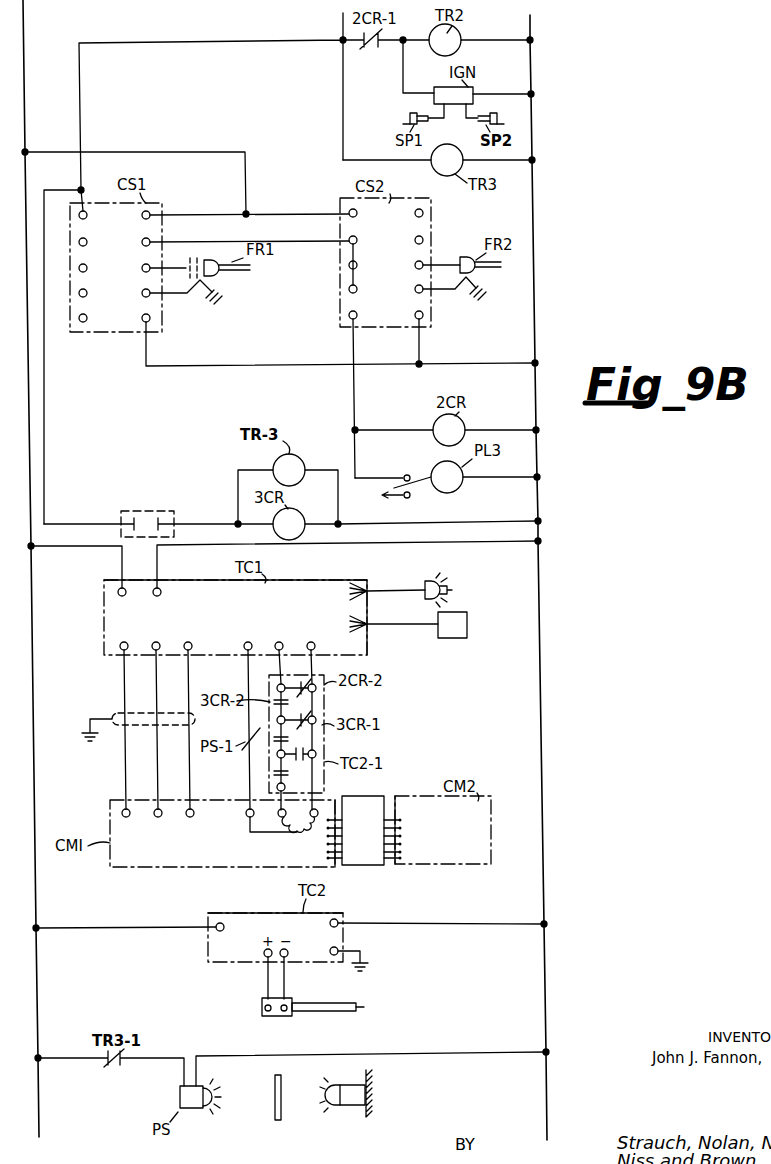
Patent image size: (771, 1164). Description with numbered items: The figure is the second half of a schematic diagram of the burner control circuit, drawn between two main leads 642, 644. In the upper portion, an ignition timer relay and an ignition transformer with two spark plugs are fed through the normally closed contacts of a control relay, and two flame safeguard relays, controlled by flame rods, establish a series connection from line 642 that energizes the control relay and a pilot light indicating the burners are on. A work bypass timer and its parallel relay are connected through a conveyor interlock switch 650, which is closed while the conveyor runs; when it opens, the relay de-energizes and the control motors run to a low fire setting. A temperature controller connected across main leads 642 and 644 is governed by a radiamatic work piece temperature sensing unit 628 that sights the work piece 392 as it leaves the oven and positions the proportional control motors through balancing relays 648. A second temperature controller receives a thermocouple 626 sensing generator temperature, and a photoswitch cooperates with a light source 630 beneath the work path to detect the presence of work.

The main lead 642 is at (24, 30).
The main lead 644 is at (532, 80).
The conveyor interlock switch 650 is at (150, 509).
The radiamatic work piece temperature sensing unit 628 is at (430, 581).
The balancing relays 648 is at (375, 866).
The thermocouple 626 is at (343, 994).
The light source 630 is at (336, 1084).
The work piece 392 is at (280, 1105).